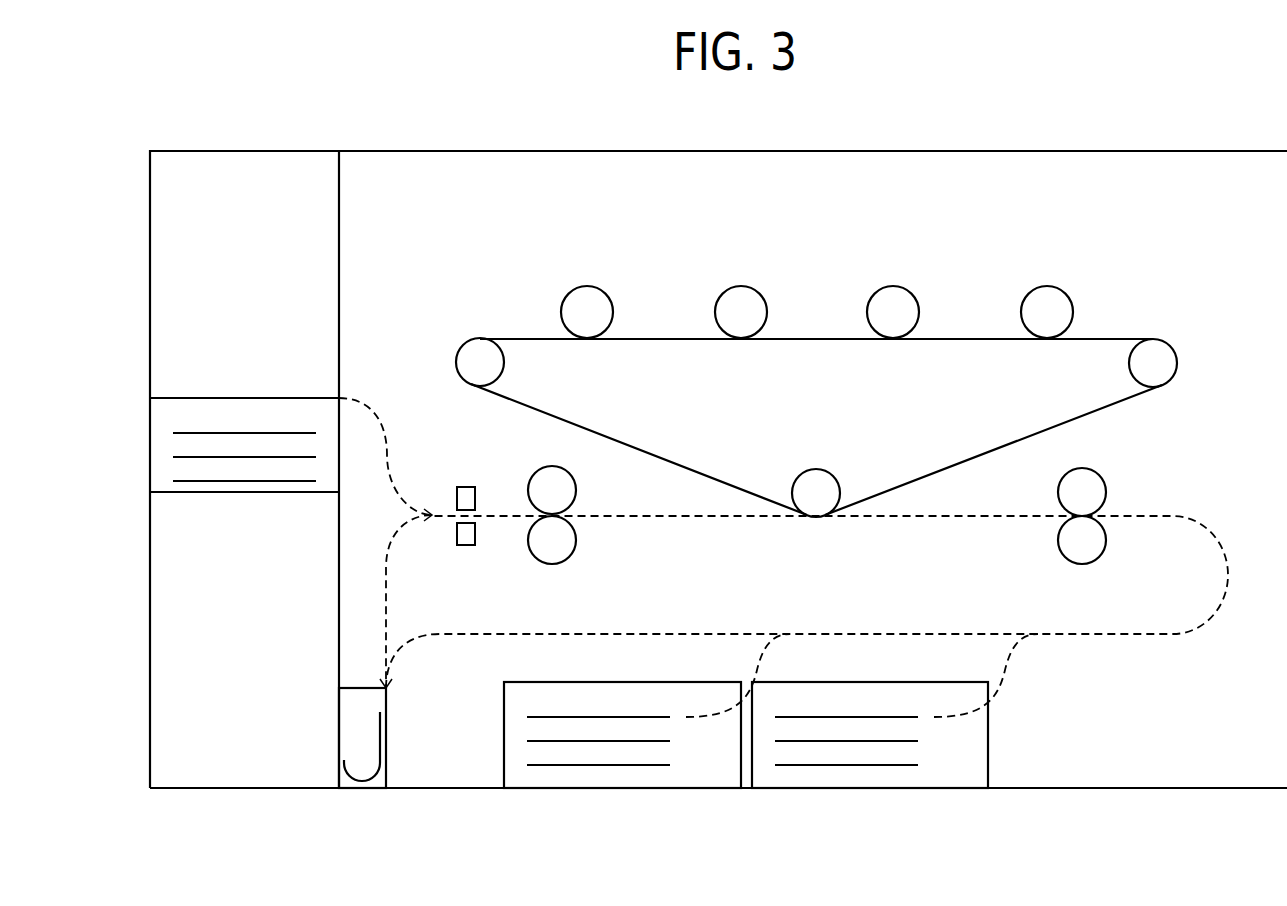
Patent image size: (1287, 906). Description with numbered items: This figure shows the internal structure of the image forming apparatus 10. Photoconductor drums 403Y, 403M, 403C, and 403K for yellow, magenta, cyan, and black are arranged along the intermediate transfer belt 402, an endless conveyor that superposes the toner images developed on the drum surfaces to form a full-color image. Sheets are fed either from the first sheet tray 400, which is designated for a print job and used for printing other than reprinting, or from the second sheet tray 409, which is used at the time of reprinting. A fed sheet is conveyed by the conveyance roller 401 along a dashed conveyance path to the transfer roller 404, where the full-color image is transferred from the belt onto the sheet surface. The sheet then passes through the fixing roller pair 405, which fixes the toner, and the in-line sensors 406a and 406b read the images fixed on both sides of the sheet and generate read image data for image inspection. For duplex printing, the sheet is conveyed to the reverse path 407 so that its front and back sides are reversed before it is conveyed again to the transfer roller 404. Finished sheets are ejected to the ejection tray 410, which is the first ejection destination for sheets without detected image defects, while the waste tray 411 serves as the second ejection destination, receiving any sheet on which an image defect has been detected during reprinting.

The image forming apparatus 10 is at (1224, 150).
The first sheet tray 400 is at (884, 682).
The conveyance roller 401 is at (1107, 492).
The intermediate transfer belt 402 is at (958, 460).
The photoconductor drum 403K is at (578, 287).
The photoconductor drum 403C is at (732, 287).
The photoconductor drum 403M is at (884, 287).
The photoconductor drum 403Y is at (1038, 287).
The transfer roller 404 is at (816, 469).
The fixing roller pair 405 is at (577, 490).
The in-line sensor 406a is at (466, 487).
The in-line sensor 406b is at (466, 545).
The reverse path 407 is at (388, 742).
The second sheet tray 409 is at (621, 682).
The ejection tray 410 is at (233, 397).
The waste tray 411 is at (368, 688).